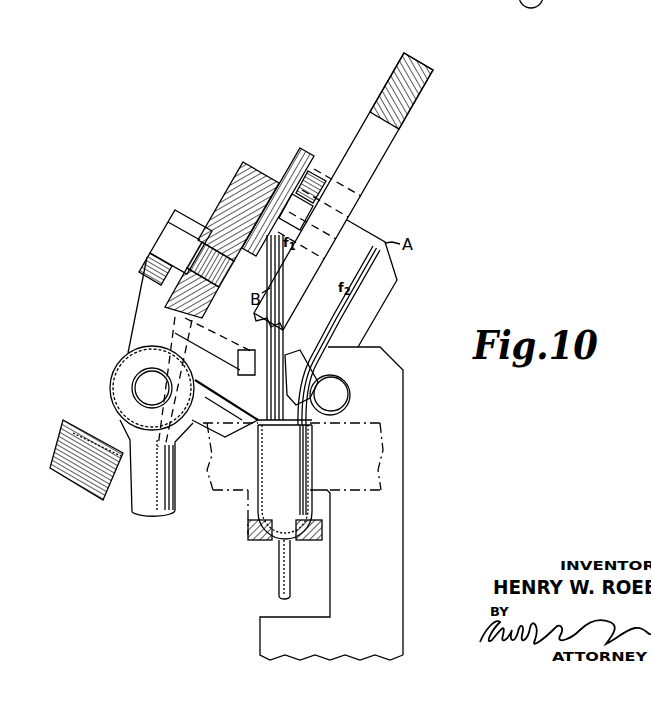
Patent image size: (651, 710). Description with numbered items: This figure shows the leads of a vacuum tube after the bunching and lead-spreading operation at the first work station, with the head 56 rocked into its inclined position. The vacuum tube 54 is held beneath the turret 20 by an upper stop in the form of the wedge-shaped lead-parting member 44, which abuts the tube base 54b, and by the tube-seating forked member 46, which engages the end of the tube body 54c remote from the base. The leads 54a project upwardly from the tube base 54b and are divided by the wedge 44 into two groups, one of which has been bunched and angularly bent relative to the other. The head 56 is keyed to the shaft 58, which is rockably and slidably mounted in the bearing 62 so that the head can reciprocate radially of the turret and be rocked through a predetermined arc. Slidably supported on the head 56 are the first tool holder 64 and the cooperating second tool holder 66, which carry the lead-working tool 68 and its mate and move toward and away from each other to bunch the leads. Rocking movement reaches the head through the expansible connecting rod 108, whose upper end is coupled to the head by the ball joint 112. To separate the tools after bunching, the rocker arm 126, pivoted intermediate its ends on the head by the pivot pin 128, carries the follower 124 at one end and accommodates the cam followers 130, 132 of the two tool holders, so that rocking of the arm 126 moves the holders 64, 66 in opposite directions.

The turret 20 is at (213, 492).
The lead-parting member 44 is at (287, 422).
The tube-seating forked member 46 is at (293, 546).
The vacuum tube 54 is at (320, 456).
The leads 54a is at (368, 288).
The tube base 54b is at (355, 399).
The tube body 54c is at (312, 505).
The head 56 is at (378, 277).
The shaft 58 is at (338, 388).
The bearing 62 is at (405, 452).
The first tool holder 64 is at (299, 282).
The second tool holder 66 is at (393, 81).
The lead-working tool 68 is at (298, 372).
The expansible connecting rod 108 is at (140, 500).
The ball joint 112 is at (130, 363).
The follower 124 is at (97, 406).
The rocker arm 126 is at (278, 184).
The pivot pin 128 is at (165, 232).
The cam follower 130 is at (232, 362).
The cam follower 132 is at (319, 186).